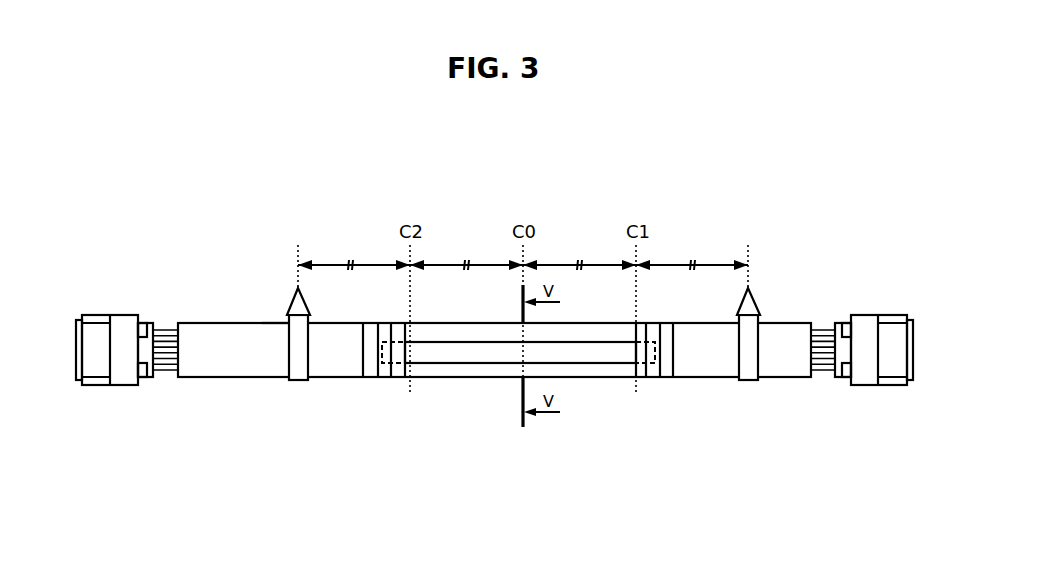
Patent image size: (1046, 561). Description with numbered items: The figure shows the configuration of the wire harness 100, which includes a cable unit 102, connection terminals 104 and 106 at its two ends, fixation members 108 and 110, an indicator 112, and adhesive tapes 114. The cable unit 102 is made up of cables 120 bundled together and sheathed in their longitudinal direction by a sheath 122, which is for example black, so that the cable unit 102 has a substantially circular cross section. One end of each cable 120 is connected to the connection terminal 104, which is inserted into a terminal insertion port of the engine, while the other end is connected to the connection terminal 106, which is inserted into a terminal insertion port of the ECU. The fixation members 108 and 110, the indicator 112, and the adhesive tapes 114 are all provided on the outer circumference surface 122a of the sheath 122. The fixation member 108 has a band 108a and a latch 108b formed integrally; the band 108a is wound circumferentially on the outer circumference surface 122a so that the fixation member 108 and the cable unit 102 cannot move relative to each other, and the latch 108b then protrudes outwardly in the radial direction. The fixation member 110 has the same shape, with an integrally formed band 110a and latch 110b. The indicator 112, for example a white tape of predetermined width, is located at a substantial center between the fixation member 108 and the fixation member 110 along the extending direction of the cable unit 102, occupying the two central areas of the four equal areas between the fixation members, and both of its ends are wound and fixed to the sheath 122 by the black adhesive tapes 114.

The wire harness 100 is at (846, 149).
The cable unit 102 is at (207, 172).
The connection terminal 104 is at (868, 378).
The connection terminal 106 is at (124, 372).
The fixation member 108 is at (739, 381).
The band 108a is at (742, 355).
The latch 108b is at (745, 302).
The fixation member 110 is at (291, 381).
The band 110a is at (292, 355).
The latch 110b is at (307, 307).
The indicator 112 is at (453, 352).
The adhesive tapes 114 is at (389, 372).
The cables 120 is at (165, 348).
The sheath 122 is at (222, 348).
The outer circumference surface 122a is at (277, 322).